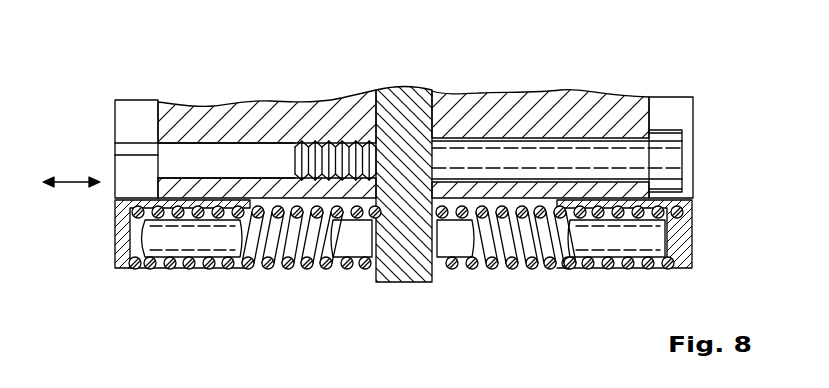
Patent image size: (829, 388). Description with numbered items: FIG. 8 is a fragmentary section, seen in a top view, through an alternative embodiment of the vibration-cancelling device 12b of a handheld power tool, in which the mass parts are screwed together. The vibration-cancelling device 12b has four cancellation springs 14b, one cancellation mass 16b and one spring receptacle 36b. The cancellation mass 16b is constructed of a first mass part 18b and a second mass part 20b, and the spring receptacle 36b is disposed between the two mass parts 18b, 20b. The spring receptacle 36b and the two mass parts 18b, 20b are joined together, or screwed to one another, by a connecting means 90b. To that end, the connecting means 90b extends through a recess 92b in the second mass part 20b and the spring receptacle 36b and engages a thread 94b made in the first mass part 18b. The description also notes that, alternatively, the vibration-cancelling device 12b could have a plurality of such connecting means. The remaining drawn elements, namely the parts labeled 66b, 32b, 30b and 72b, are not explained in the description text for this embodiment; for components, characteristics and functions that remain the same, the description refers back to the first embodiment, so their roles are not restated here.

The vibration-cancelling device 12b is at (158, 76).
The cancellation mass 16b is at (603, 82).
The first mass part 18b is at (272, 122).
The second mass part 20b is at (558, 117).
The recess 92b is at (202, 160).
The thread 94b is at (331, 147).
The spring receptacle 36b is at (405, 273).
The end plate 66b is at (113, 120).
The bearing seat 32b is at (125, 143).
The connecting means 90b is at (672, 175).
The direction of movement 30b is at (73, 186).
The linear bearing sleeve 72b is at (182, 248).
The cancellation springs 14b is at (285, 262).